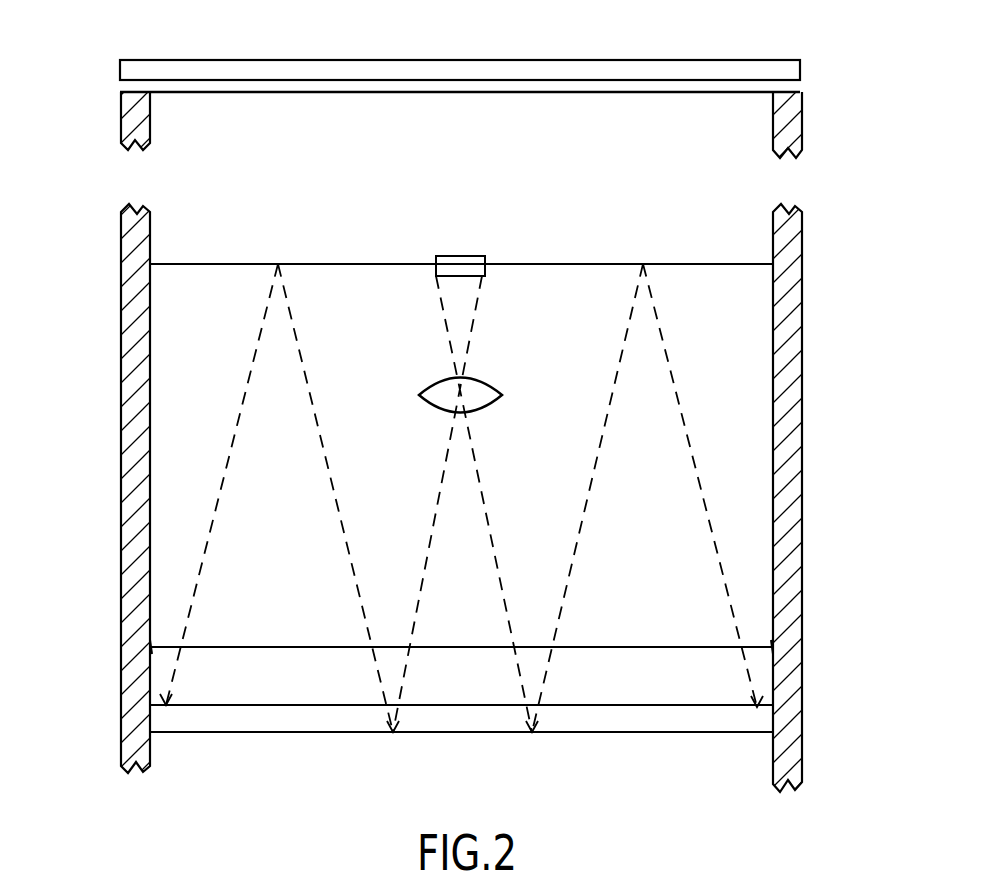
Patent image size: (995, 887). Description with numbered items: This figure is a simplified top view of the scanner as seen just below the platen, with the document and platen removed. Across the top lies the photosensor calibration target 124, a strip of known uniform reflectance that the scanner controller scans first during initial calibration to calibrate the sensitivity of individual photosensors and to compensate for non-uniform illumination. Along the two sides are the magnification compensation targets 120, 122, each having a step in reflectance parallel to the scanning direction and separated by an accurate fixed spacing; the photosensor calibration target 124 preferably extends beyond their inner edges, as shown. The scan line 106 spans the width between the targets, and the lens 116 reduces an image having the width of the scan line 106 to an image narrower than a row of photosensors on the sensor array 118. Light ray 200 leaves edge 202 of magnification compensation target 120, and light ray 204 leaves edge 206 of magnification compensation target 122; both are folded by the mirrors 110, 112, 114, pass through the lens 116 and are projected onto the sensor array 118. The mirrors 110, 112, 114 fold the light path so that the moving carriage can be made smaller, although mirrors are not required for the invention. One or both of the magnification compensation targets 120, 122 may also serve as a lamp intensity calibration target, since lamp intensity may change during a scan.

The scan line 106 is at (676, 648).
The first mirror 110 is at (295, 705).
The second mirror 112 is at (238, 263).
The third mirror 114 is at (362, 732).
The lens system 116 is at (495, 388).
The sensor array 118 is at (485, 276).
The magnification compensation target 120 is at (121, 358).
The magnification compensation target 122 is at (803, 365).
The photosensor calibration target 124 is at (783, 60).
The light ray 200 is at (208, 546).
The edge 202 is at (152, 645).
The light ray 204 is at (718, 546).
The edge 206 is at (773, 648).